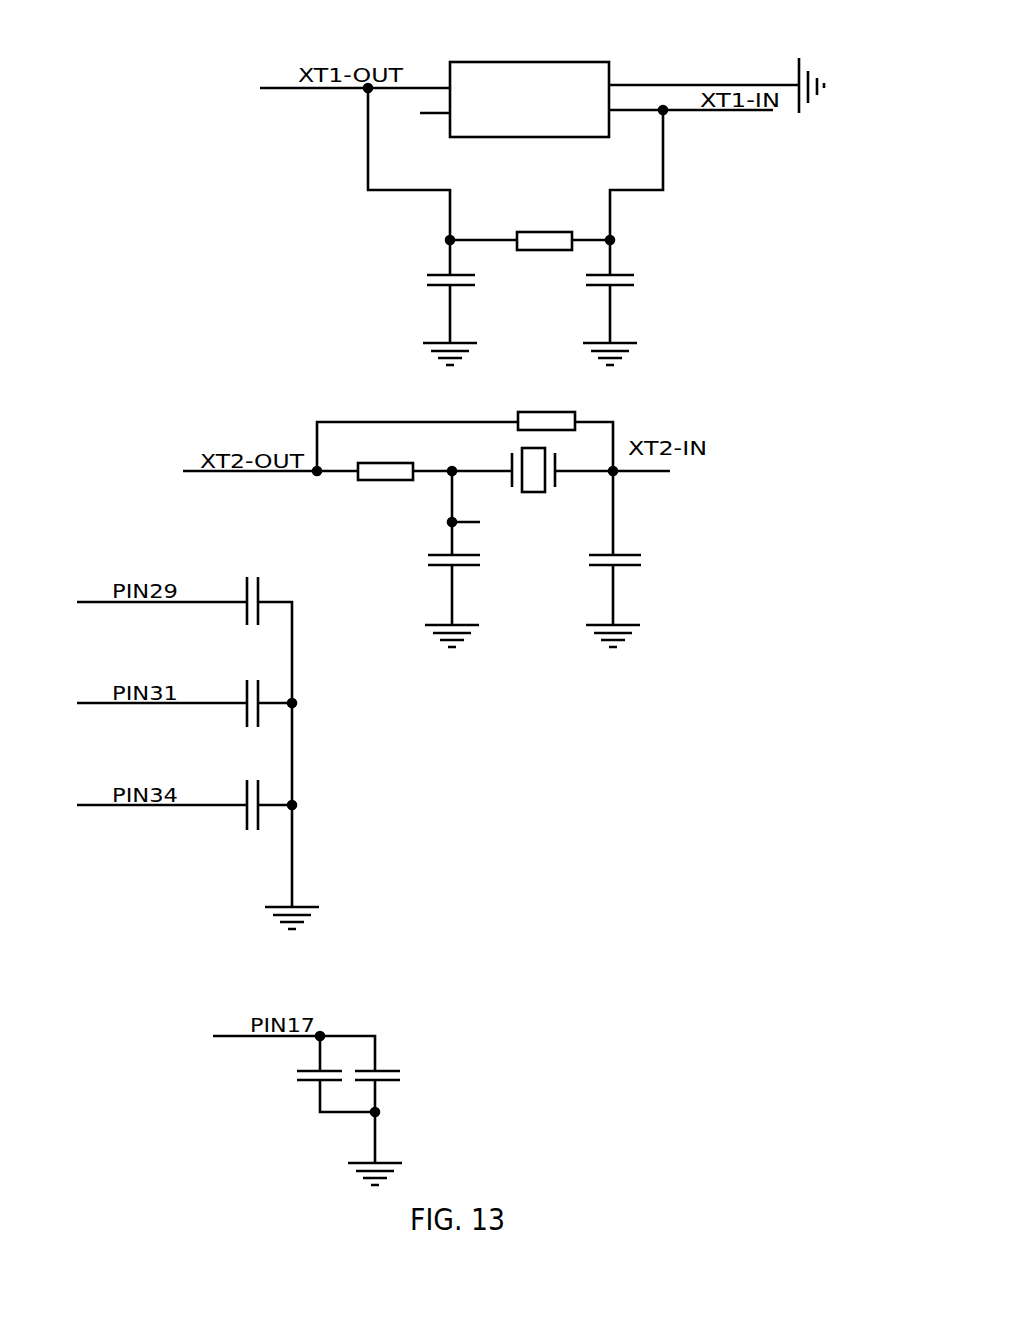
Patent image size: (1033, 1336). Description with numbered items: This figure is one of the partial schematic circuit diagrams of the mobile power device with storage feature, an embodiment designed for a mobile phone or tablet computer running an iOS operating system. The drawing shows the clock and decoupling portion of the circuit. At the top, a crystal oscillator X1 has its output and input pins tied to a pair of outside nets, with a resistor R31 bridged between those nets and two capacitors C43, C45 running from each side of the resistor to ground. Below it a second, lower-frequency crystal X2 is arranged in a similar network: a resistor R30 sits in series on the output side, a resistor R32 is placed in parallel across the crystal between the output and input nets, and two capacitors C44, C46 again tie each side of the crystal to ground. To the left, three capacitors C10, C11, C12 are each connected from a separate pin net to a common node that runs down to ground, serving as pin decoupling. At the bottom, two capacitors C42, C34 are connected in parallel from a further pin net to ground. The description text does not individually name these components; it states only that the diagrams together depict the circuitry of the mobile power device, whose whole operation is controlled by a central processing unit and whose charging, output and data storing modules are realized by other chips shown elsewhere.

The crystal oscillator X1 (Cristal) X1 is at (609, 75).
The resistor R31 1M R31 is at (530, 242).
The capacitor C43 22pF C43 is at (479, 316).
The capacitor C45 22pF C45 is at (640, 316).
The resistor R32 10M R32 is at (545, 395).
The resistor R30 220K R30 is at (388, 474).
The crystal X2 32.768KHZ X2 is at (538, 478).
The capacitor C44 22pF C44 is at (481, 597).
The capacitor C46 22pF C46 is at (643, 597).
The capacitor C10 4.7uF C10 is at (252, 602).
The capacitor C11 4.7uF C11 is at (247, 701).
The capacitor C12 4.7uF C12 is at (241, 809).
The capacitor C42 10uF C42 is at (295, 1086).
The capacitor C34 0.1uF C34 is at (411, 1086).